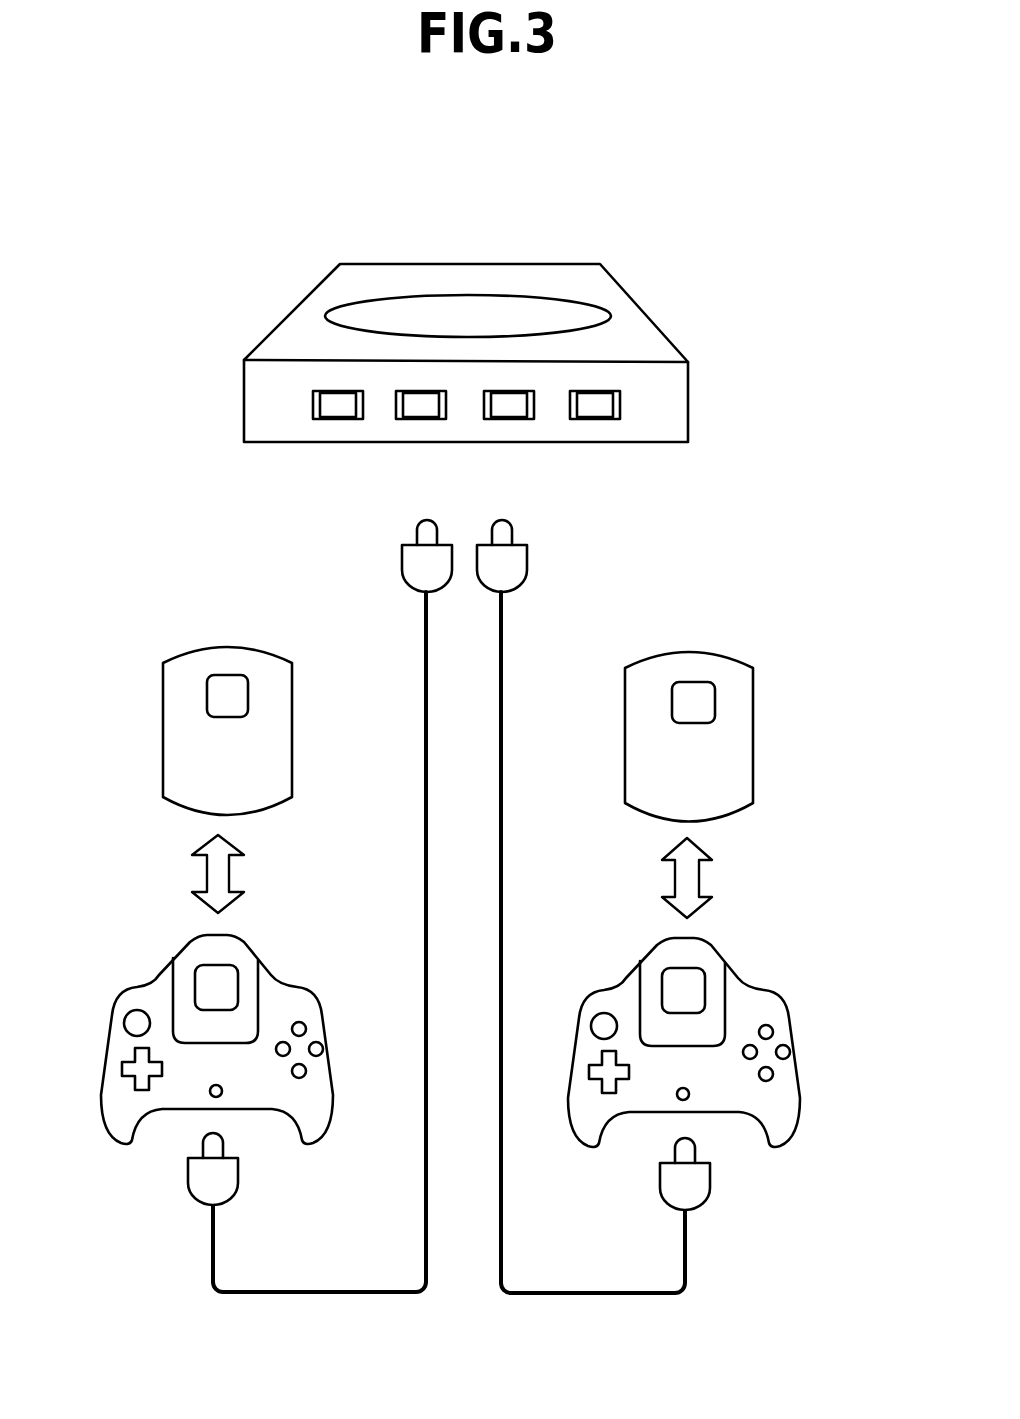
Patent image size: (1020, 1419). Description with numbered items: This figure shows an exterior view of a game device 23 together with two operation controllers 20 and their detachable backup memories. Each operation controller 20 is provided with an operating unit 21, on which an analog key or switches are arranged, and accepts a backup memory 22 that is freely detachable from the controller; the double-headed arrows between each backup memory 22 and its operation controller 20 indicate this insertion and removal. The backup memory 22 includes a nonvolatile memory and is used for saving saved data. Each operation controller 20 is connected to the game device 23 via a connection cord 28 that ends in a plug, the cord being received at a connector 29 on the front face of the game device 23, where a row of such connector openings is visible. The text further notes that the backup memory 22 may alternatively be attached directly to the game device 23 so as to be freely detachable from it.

The operation controller 20 is at (480, 1051).
The operating unit 21 is at (122, 1063).
The backup memory 22 is at (227, 647).
The game device 23 is at (466, 354).
The connection cord 28 is at (298, 1294).
The connector 29 is at (596, 419).